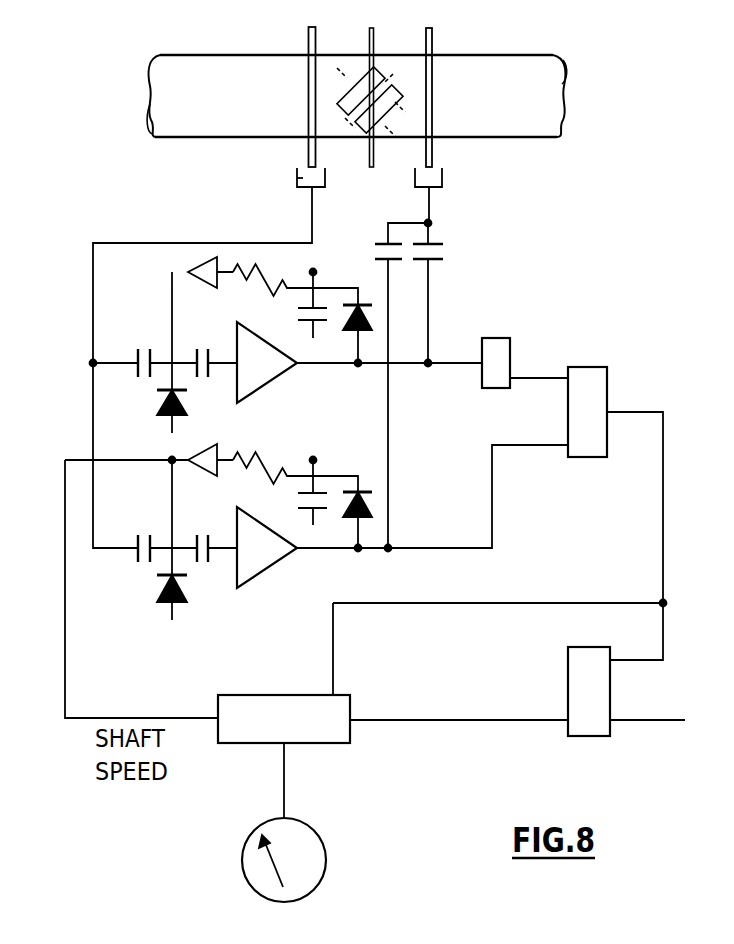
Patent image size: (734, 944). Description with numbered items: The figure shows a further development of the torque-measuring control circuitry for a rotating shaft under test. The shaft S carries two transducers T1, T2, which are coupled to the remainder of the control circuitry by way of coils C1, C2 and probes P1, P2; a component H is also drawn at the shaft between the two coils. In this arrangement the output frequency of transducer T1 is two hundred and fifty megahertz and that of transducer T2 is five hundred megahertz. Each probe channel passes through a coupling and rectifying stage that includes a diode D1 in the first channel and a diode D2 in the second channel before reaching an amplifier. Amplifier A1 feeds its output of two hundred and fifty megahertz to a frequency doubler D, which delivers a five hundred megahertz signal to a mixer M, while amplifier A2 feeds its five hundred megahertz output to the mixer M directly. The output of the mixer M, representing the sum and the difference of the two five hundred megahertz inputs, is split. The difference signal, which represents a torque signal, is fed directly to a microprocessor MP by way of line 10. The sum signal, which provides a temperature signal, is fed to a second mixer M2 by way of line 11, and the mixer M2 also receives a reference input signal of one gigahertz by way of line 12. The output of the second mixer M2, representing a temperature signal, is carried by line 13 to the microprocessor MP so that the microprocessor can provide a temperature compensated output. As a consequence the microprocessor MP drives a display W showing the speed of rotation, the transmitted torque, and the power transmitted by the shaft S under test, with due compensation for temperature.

The shaft S is at (185, 130).
The coil C1 is at (308, 33).
The coil C2 is at (433, 40).
The housing / holder H is at (369, 38).
The transducer T1 is at (345, 110).
The transducer T2 is at (400, 105).
The probe P1 is at (297, 180).
The probe P2 is at (442, 187).
The first diode D1 is at (157, 397).
The second diode D2 is at (157, 582).
The amplifier A1 is at (262, 375).
The amplifier A2 is at (262, 560).
The frequency doubler D is at (496, 363).
The mixer M is at (587, 412).
The second mixer M2 is at (589, 691).
The microprocessor MP is at (284, 719).
The display W is at (310, 843).
The line 10 is at (628, 603).
The line 11 is at (640, 660).
The line 12 is at (648, 722).
The line 13 is at (435, 720).